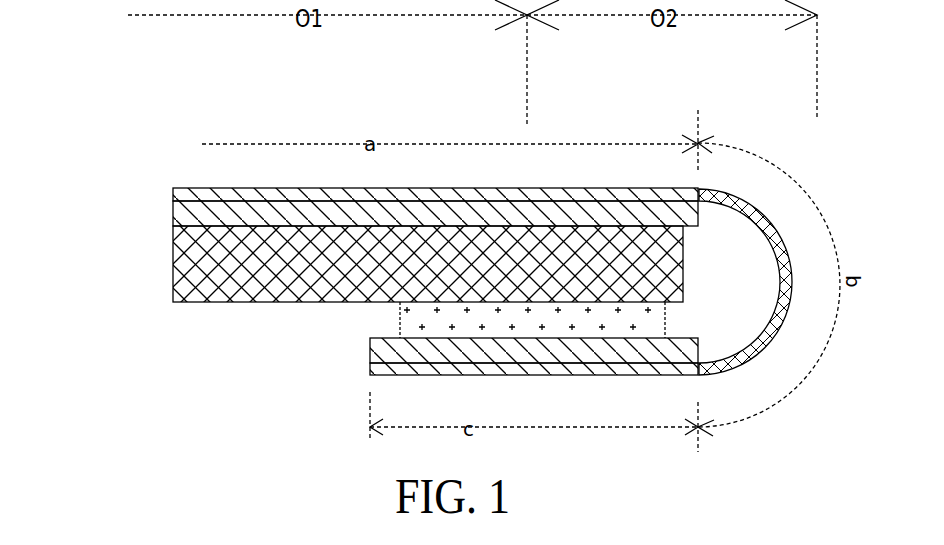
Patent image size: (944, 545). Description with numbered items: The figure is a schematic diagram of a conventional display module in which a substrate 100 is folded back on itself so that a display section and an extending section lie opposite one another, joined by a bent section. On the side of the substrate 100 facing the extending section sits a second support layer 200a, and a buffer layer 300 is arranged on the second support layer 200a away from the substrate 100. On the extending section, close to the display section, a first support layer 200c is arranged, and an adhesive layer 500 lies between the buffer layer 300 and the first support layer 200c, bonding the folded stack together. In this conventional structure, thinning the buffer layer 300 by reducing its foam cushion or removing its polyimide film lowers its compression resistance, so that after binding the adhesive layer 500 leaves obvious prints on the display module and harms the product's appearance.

The substrate 100 is at (177, 190).
The second support layer 200a is at (181, 219).
The buffer layer 300 is at (187, 270).
The adhesive layer 500 is at (413, 312).
The first support layer 200c is at (380, 357).